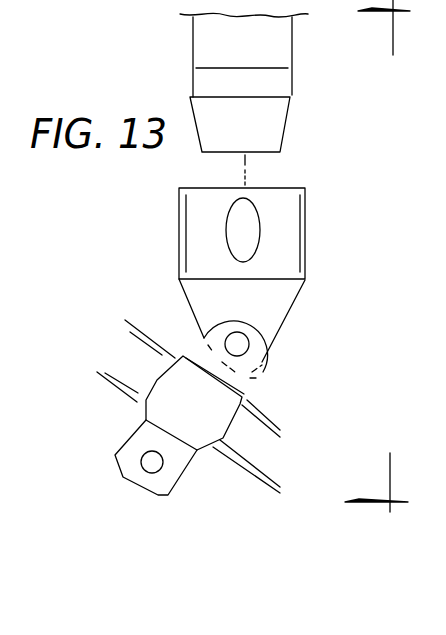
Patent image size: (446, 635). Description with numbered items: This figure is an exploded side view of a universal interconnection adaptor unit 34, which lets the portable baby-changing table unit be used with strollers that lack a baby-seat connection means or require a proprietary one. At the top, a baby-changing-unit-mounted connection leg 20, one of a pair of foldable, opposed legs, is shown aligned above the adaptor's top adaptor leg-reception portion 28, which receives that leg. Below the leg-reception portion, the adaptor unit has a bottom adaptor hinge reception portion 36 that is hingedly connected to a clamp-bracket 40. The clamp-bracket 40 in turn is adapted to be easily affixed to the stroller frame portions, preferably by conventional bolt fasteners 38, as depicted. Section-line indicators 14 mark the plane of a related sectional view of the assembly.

The section line 14 is at (395, 256).
The baby-changing-unit-mounted connection leg 20 is at (268, 125).
The top adaptor leg-reception portion 28 is at (288, 232).
The universal interconnection adaptor unit 34 is at (177, 223).
The bottom adaptor hinge reception portion 36 is at (273, 303).
The bolt fastener 38 is at (232, 346).
The clamp-bracket 40 is at (258, 370).